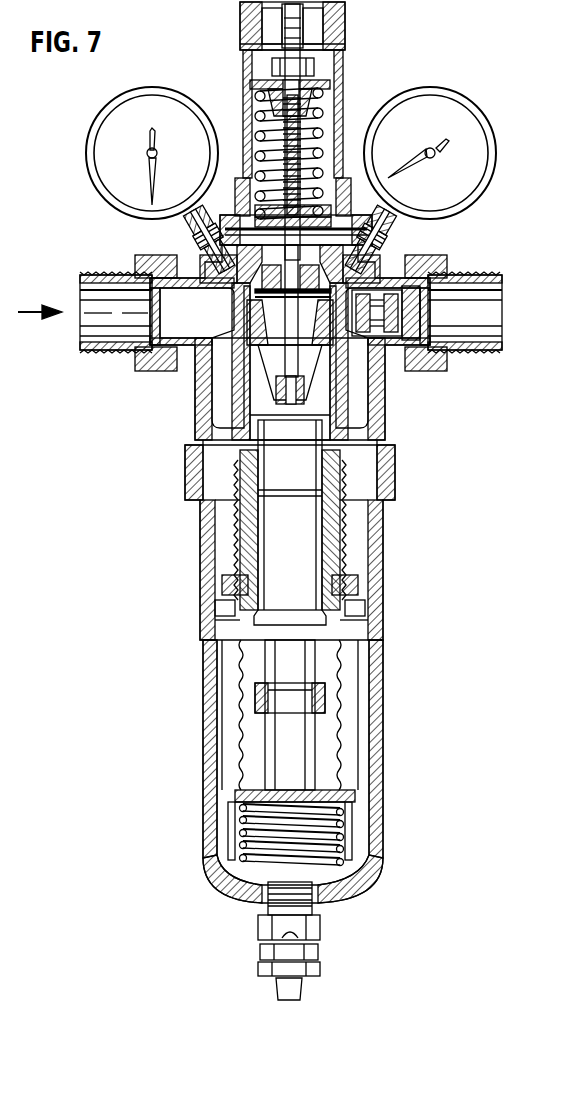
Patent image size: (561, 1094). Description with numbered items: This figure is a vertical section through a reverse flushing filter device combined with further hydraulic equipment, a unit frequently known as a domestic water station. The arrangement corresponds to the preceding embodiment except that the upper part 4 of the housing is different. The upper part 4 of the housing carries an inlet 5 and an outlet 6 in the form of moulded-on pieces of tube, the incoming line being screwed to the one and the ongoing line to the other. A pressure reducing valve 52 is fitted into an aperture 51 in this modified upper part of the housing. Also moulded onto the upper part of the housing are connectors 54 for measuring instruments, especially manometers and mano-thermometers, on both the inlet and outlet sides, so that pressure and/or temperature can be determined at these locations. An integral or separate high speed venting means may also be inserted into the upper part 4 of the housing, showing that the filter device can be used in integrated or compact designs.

The upper part of the housing 4 is at (440, 271).
The inlet 5 is at (118, 322).
The outlet 6 is at (472, 322).
The aperture 51 is at (185, 240).
The pressure reducing valve 52 is at (343, 84).
The connector for measuring instruments 54 is at (405, 230).